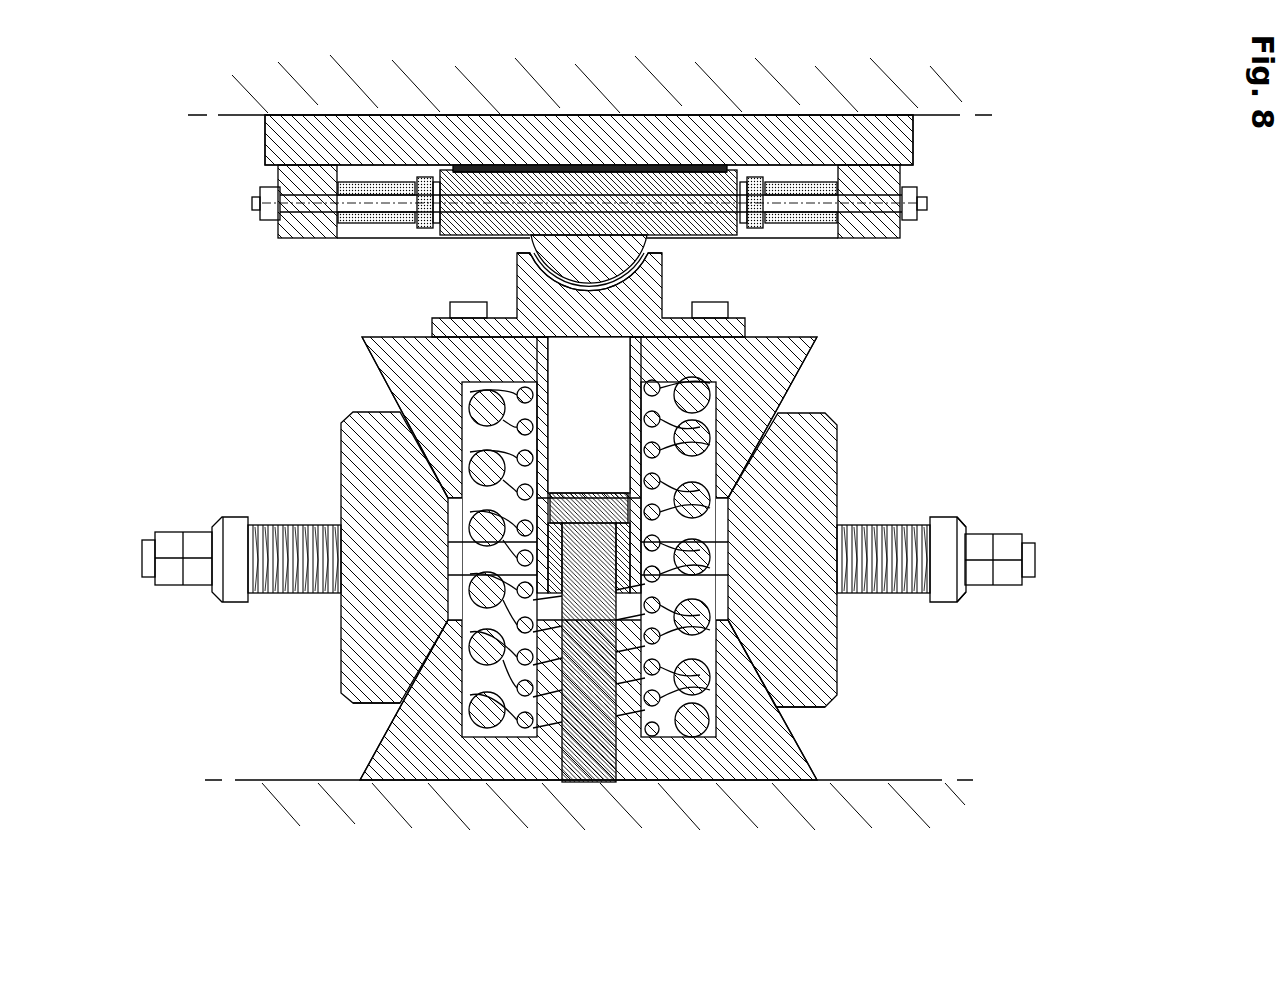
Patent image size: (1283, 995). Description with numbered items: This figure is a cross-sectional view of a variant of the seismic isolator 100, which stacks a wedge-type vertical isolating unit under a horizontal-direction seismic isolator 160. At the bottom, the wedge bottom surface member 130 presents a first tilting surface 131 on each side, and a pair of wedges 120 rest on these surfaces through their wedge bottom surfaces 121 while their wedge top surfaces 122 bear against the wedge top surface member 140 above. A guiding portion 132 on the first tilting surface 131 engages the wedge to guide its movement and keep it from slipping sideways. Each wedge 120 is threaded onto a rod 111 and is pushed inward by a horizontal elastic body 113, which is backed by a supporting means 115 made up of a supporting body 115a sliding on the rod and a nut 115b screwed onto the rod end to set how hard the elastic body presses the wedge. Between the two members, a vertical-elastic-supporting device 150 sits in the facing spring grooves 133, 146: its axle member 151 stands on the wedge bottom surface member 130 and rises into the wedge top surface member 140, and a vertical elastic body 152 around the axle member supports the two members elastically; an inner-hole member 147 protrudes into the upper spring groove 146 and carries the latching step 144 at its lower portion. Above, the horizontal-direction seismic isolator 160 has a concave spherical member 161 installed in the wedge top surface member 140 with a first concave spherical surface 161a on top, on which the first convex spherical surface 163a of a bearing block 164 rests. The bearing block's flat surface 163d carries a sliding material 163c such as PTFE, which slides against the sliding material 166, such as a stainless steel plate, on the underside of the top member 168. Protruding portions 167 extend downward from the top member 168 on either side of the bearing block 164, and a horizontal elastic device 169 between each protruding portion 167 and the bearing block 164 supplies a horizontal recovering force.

The seismic isolator 100 is at (128, 128).
The rod 111 is at (1037, 568).
The horizontal elastic body 113 is at (902, 523).
The supporting means 115 is at (975, 512).
The supporting body 115a is at (962, 593).
The nut 115b is at (1008, 582).
The wedge 120 is at (342, 625).
The wedge bottom surface 121 is at (822, 707).
The wedge top surface 122 is at (745, 437).
The wedge bottom surface member 130 is at (765, 757).
The first tilting surface 131 is at (797, 740).
The guiding portion 132 is at (790, 392).
The spring groove 133 is at (470, 677).
The wedge top surface member 140 is at (812, 353).
The latching step 144 is at (645, 640).
The spring groove 146 is at (482, 437).
The inner-hole member 147 is at (538, 368).
The vertical-elastic-supporting device 150 is at (475, 727).
The axle member 151 is at (588, 782).
The vertical elastic body 152 is at (372, 697).
The horizontal-direction seismic isolator 160 is at (896, 141).
The concave spherical member 161 is at (528, 297).
The first concave spherical surface 161a is at (530, 250).
The first convex spherical surface 163a is at (630, 290).
The sliding material 163c is at (547, 163).
The flat surface 163d is at (650, 163).
The bearing block 164 is at (697, 200).
The sliding material 166 is at (463, 167).
The protruding portion 167 is at (882, 232).
The top member 168 is at (813, 133).
The horizontal elastic device 169 is at (373, 187).